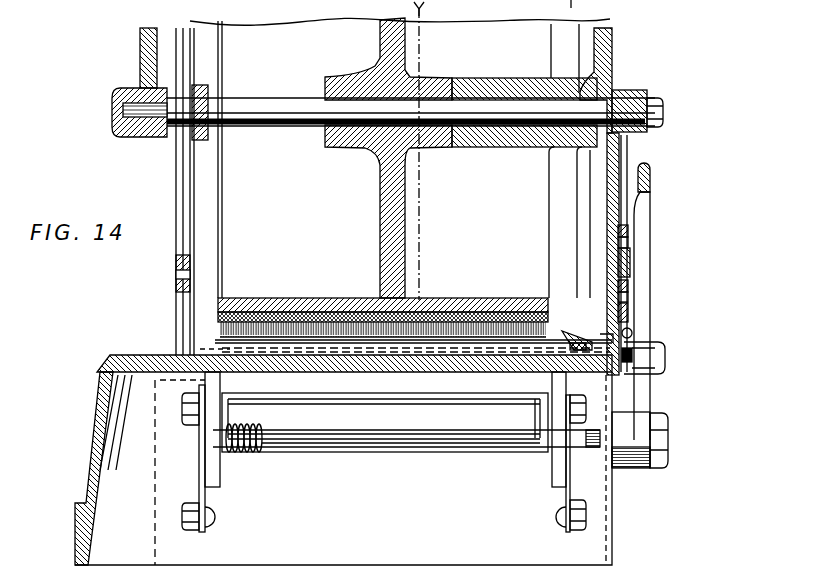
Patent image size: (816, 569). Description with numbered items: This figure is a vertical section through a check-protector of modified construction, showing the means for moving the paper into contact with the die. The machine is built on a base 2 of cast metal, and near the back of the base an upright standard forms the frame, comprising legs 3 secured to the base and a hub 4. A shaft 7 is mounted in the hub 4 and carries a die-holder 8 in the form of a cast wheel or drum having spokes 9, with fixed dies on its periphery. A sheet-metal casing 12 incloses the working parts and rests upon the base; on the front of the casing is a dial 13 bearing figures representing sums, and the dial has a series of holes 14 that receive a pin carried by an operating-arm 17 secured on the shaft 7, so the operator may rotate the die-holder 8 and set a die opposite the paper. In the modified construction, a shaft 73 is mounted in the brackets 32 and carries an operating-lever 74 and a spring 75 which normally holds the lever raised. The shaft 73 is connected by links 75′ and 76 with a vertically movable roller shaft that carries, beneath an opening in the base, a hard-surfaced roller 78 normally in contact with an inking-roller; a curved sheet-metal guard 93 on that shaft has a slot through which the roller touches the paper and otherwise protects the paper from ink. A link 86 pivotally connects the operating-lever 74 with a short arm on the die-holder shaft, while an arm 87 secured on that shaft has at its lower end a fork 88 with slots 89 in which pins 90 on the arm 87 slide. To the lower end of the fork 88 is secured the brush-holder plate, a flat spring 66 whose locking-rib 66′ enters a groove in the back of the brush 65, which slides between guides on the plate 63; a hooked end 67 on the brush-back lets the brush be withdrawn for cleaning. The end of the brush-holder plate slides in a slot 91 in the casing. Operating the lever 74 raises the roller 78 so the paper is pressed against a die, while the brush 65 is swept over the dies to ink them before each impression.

The base 2 is at (100, 433).
The legs 3 is at (602, 211).
The hub 4 is at (483, 80).
The shaft 7 is at (258, 112).
The die-holder 8 is at (443, 297).
The spokes 9 is at (392, 205).
The sheet-metal casing 12 is at (612, 44).
The dial 13 is at (183, 178).
The holes 14 is at (178, 276).
The operating-arm 17 is at (140, 51).
The brackets 32 is at (212, 500).
The plate 63 is at (261, 350).
The brush 65 is at (288, 318).
The flat spring 66 is at (561, 340).
The locking-rib 66′ is at (665, 372).
The hooked end 67 is at (664, 348).
The shaft 73 is at (428, 441).
The operating-lever 74 is at (645, 310).
The spring 75 is at (222, 498).
The link 75′ is at (600, 487).
The link 76 is at (196, 494).
The hard-surfaced roller 78 is at (305, 412).
The link 86 is at (624, 158).
The arm 87 is at (612, 176).
The fork 88 is at (630, 263).
The slots 89 is at (629, 232).
The pins 90 is at (629, 243).
The slot 91 is at (633, 334).
The curved sheet-metal guard 93 is at (444, 392).